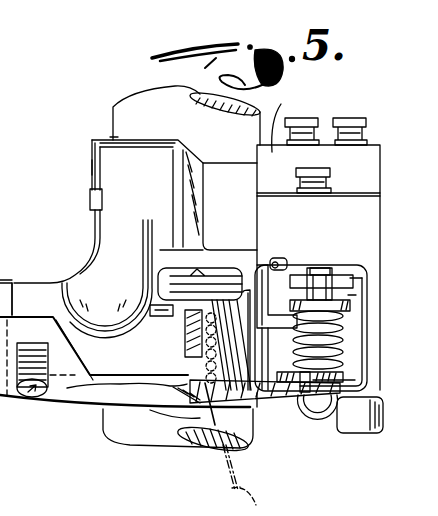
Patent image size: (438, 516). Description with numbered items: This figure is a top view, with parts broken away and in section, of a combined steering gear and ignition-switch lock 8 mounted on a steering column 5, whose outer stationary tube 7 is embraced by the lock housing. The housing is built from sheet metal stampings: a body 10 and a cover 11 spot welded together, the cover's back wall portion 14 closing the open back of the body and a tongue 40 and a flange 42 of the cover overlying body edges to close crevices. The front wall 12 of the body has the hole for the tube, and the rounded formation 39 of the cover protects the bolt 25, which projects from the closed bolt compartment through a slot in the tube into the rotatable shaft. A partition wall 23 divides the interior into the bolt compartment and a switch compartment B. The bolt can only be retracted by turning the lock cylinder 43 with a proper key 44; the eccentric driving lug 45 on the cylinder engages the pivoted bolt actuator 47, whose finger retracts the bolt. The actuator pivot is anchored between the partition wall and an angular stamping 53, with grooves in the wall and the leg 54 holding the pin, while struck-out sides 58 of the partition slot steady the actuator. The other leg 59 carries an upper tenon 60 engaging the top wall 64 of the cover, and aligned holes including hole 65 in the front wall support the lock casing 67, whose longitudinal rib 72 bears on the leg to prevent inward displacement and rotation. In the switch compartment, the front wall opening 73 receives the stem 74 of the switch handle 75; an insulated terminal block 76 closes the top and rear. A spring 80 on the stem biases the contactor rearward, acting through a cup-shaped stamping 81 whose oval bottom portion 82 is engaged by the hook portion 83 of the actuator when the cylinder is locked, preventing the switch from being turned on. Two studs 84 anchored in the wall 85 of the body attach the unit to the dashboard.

The steering column 5 is at (124, 100).
The outer stationary tube 7 is at (162, 108).
The combined steering gear and ignition-switch lock 8 is at (89, 162).
The body 10 is at (70, 405).
The cover 11 is at (117, 226).
The front wall 12 is at (90, 412).
The back wall portion 14 is at (158, 140).
The partition wall 23 is at (262, 268).
The bolt 25 is at (6, 249).
The rounded or depressed formation 39 is at (210, 203).
The tongue 40 is at (113, 136).
The flange 42 is at (90, 200).
The lock cylinder 43 is at (207, 428).
The key 44 is at (258, 503).
The eccentric cam or driving lug 45 is at (200, 273).
The bolt actuator 47 is at (232, 278).
The angular stamping 53 is at (186, 346).
The leg 54 is at (259, 403).
The struck-out slot sides 58 is at (293, 252).
The leg 59 is at (170, 316).
The upper tongue or tenon 60 is at (148, 292).
The top wall 64 is at (107, 364).
The hole 65 is at (188, 420).
The lock casing 67 is at (180, 392).
The longitudinal rib 72 is at (213, 440).
The opening 73 is at (300, 410).
The stem 74 is at (365, 381).
The switch handle 75 is at (340, 425).
The insulated terminal block 76 is at (370, 178).
The spring 80 is at (320, 341).
The cup-shaped stamping 81 is at (328, 273).
The oval-shaped bottom portion 82 is at (305, 275).
The hook portion 83 is at (343, 292).
The studs 84 is at (32, 396).
The wall 85 is at (50, 304).
The switch compartment B is at (348, 295).